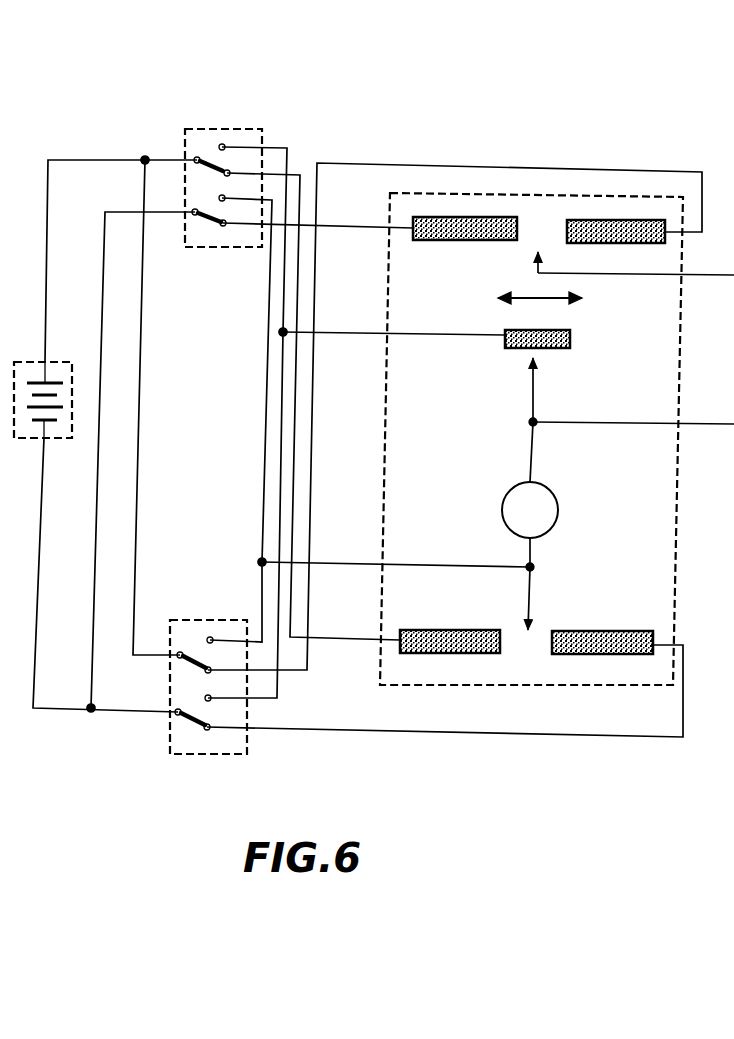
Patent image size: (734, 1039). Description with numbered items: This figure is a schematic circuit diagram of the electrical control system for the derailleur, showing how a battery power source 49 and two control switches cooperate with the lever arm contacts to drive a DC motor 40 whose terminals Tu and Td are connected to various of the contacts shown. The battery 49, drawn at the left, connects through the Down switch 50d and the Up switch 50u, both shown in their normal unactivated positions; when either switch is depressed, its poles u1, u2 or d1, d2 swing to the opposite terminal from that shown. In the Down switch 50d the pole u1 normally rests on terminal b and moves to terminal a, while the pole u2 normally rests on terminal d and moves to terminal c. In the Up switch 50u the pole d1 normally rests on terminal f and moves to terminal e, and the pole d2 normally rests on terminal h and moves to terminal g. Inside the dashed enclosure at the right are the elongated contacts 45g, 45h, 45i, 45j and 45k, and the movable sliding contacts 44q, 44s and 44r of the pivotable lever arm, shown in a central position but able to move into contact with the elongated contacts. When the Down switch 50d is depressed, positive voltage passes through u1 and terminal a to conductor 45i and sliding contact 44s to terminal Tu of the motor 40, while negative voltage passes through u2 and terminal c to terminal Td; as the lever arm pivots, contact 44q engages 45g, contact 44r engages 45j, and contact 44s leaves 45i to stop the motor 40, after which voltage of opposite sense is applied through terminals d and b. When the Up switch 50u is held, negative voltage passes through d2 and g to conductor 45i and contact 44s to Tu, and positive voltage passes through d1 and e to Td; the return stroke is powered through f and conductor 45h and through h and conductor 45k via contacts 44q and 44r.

The battery power source 49 is at (74, 364).
The Down switch 50d is at (241, 173).
The Up switch 50u is at (237, 705).
The elongated contact (conductor) 45g is at (468, 242).
The elongated contact (conductor) 45h is at (636, 245).
The elongated contact (conductor) 45i is at (571, 338).
The elongated contact (conductor) 45j is at (446, 608).
The elongated contact (conductor) 45k is at (645, 615).
The sliding contact (movable contact) 44q is at (541, 256).
The sliding contact (movable contact) 44s is at (536, 362).
The sliding contact (movable contact) 44r is at (533, 608).
The DC motor 40 is at (558, 506).
The motor terminal Tu is at (528, 421).
The motor terminal Td is at (536, 564).
The switch terminal a is at (224, 144).
The switch terminal b is at (232, 182).
The switch terminal c is at (224, 194).
The switch terminal d is at (222, 228).
The switch terminal e is at (216, 630).
The switch terminal f is at (212, 666).
The switch terminal g is at (204, 690).
The switch terminal h is at (206, 732).
The switch pole u1 is at (207, 164).
The switch pole u2 is at (192, 216).
The switch pole d1 is at (199, 664).
The switch pole d2 is at (196, 722).